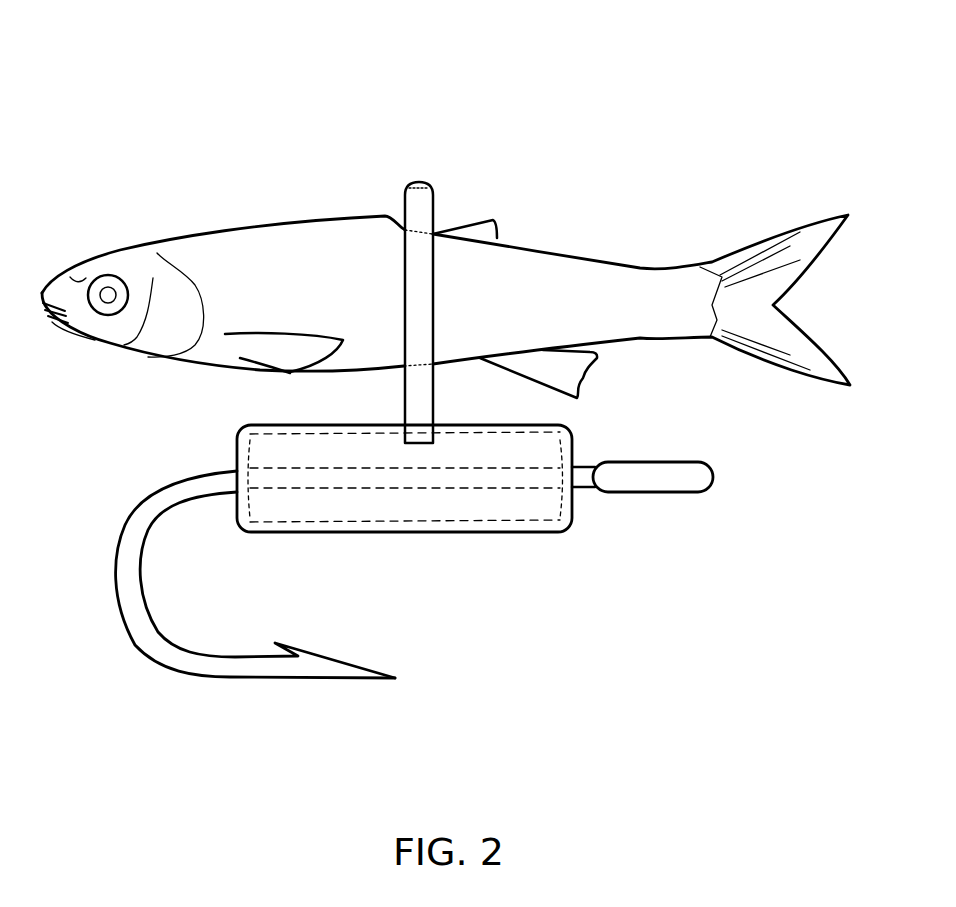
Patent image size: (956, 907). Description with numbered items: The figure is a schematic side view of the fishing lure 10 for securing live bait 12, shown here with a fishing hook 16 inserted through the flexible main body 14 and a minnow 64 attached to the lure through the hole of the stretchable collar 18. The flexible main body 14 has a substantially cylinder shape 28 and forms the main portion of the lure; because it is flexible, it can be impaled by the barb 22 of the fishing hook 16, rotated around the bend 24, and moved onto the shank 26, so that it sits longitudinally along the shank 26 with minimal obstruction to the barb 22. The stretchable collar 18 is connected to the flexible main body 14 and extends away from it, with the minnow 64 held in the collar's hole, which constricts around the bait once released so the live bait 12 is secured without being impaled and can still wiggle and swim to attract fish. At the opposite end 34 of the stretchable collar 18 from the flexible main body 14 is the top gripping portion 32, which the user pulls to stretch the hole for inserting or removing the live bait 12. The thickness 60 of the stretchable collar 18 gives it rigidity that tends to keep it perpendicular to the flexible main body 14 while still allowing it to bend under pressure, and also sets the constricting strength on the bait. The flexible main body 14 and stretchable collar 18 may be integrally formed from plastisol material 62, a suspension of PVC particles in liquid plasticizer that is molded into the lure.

The fishing lure 10 is at (221, 78).
The live bait 12 is at (446, 253).
The minnow 64 is at (213, 245).
The flexible main body 14 is at (500, 533).
The fishing hook 16 is at (123, 520).
The stretchable collar 18 is at (425, 180).
The barb 22 is at (344, 643).
The bend 24 is at (168, 600).
The shank 26 is at (394, 538).
The substantially cylinder shape 28 is at (218, 415).
The top gripping portion 32 is at (445, 197).
The opposite end 34 is at (442, 420).
The thickness 60 is at (431, 313).
The plastisol material 62 is at (575, 505).